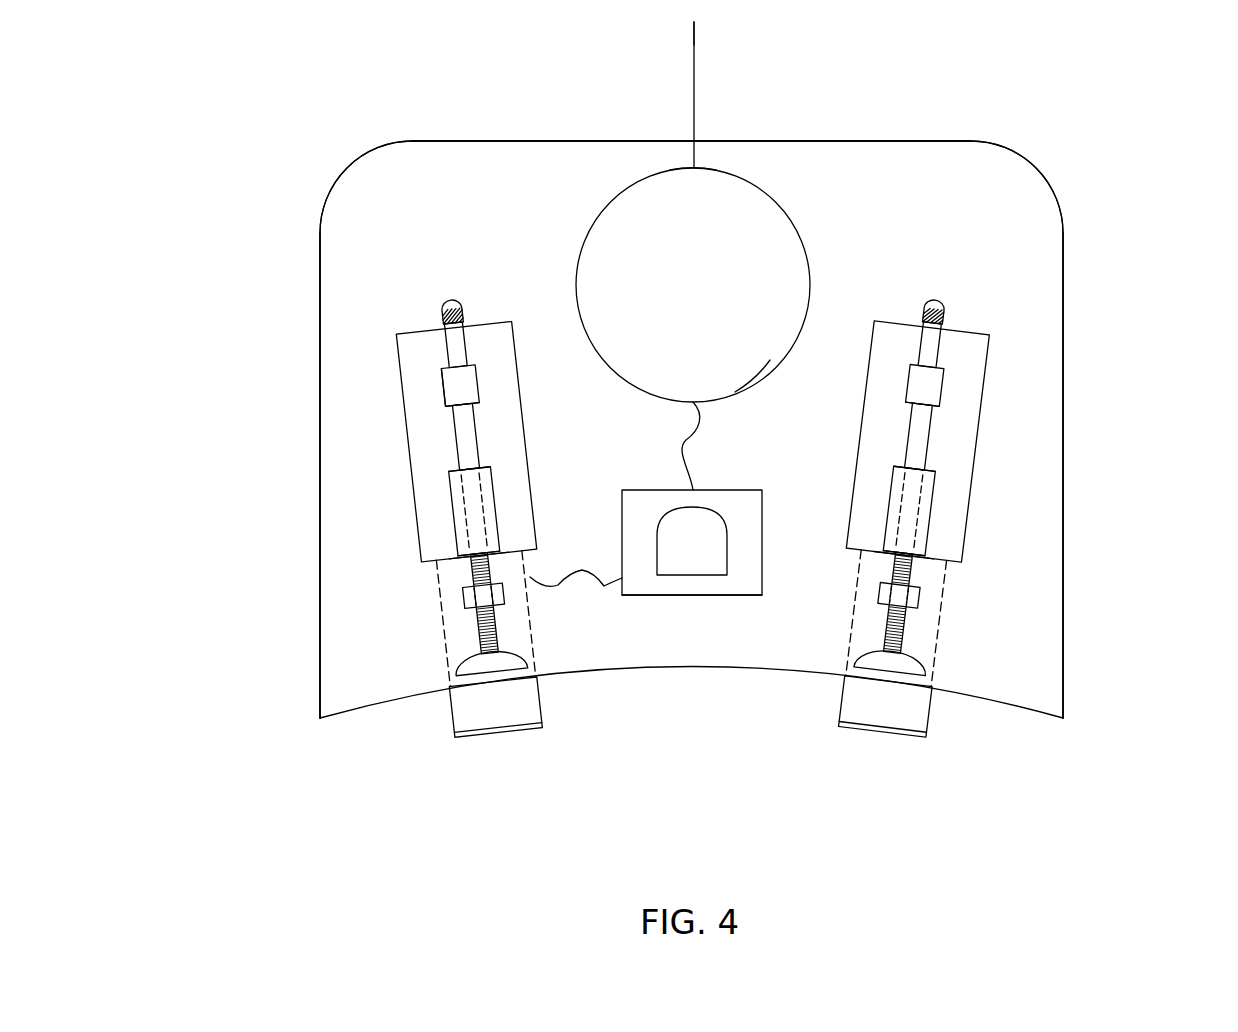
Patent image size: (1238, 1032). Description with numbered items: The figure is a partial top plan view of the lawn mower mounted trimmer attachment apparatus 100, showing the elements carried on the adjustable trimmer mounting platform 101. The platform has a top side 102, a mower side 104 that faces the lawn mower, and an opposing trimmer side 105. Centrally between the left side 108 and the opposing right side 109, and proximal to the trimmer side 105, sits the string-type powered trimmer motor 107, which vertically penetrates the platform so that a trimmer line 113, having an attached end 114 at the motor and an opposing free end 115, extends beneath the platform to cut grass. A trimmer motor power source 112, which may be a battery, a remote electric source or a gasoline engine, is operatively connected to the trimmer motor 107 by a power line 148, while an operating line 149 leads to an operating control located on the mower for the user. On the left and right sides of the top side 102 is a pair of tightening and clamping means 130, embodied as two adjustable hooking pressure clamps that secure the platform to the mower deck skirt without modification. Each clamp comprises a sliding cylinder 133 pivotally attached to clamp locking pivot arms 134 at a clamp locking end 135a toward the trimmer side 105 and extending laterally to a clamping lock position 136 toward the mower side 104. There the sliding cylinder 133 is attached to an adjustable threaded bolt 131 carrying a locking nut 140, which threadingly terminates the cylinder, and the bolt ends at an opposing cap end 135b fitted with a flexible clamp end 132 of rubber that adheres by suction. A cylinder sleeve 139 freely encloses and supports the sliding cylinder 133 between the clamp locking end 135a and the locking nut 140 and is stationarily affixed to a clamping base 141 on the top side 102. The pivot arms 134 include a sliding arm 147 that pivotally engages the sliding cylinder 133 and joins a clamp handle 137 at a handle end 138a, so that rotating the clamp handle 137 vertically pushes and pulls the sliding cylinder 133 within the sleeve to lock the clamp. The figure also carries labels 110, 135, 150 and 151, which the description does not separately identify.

The lawn mower mounted trimmer attachment apparatus 100 is at (1132, 130).
The adjustable trimmer mounting platform 101 is at (797, 430).
The top side 102 is at (957, 231).
The mower side 104 is at (408, 695).
The opposing trimmer side 105 is at (835, 141).
The string-type powered trimmer motor 107 is at (714, 301).
The left side 108 is at (1063, 548).
The opposing right side 109 is at (320, 500).
The base 110 is at (543, 702).
The trimmer motor power source 112 is at (648, 595).
The trimmer line 113 is at (694, 72).
The attached end 114 is at (700, 166).
The opposing free end 115 is at (694, 22).
The tightening and clamping means 130 is at (477, 433).
The adjustable threaded bolt 131 is at (496, 628).
The flexible clamp end 132 is at (528, 662).
The sliding cylinder 133 is at (480, 457).
The clamp locking pivot arms 134 is at (478, 382).
The guide 135 is at (930, 401).
The clamp locking end 135a is at (477, 410).
The opposing cap end 135b is at (458, 653).
The clamping lock position 136 is at (462, 580).
The clamp handle 137 is at (452, 300).
The handle end 138a is at (463, 357).
The cylinder sleeve 139 is at (527, 477).
The locking nut 140 is at (478, 606).
The clamping base 141 is at (438, 523).
The sliding arm 147 is at (442, 398).
The power line 148 is at (698, 456).
The operating line 149 is at (566, 571).
The controller 150 is at (714, 560).
The controller box 151 is at (762, 555).